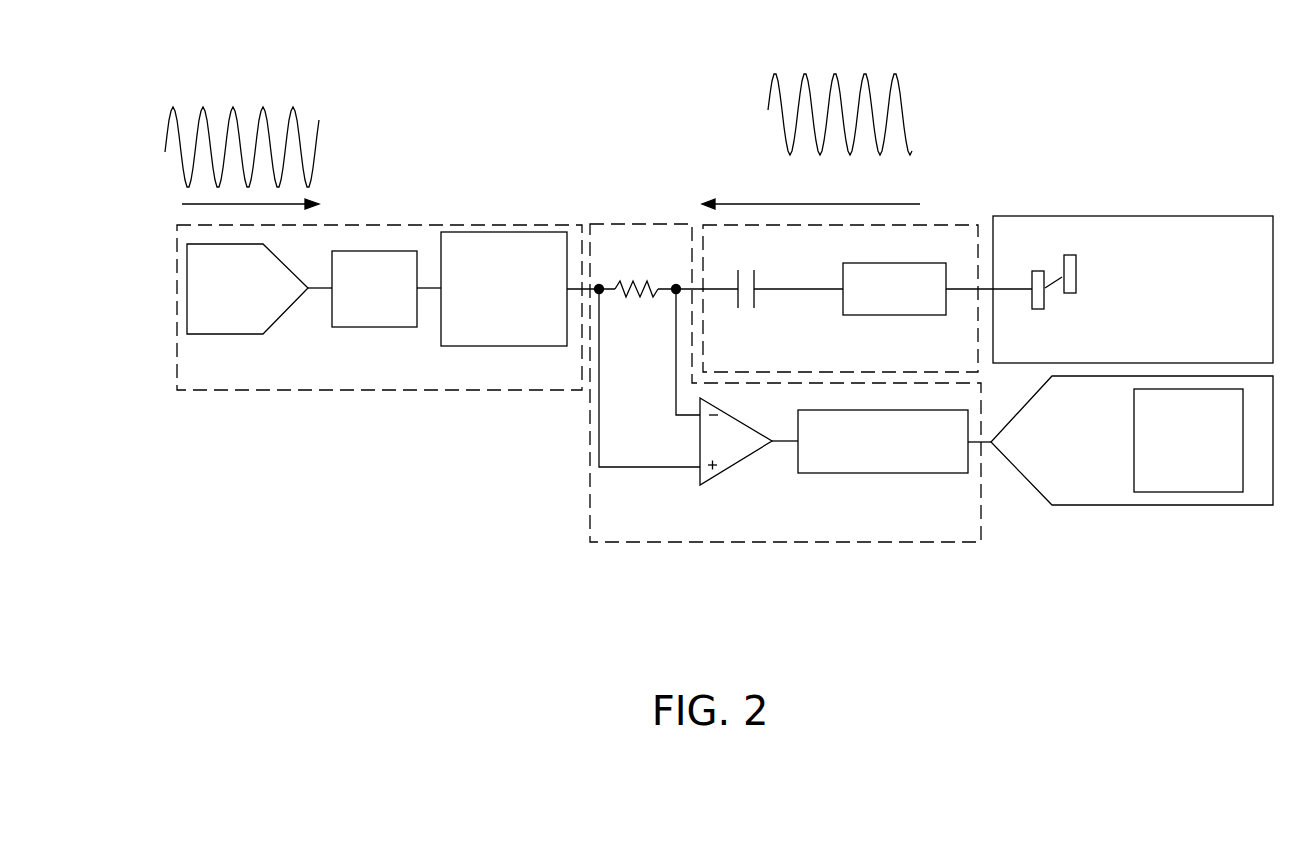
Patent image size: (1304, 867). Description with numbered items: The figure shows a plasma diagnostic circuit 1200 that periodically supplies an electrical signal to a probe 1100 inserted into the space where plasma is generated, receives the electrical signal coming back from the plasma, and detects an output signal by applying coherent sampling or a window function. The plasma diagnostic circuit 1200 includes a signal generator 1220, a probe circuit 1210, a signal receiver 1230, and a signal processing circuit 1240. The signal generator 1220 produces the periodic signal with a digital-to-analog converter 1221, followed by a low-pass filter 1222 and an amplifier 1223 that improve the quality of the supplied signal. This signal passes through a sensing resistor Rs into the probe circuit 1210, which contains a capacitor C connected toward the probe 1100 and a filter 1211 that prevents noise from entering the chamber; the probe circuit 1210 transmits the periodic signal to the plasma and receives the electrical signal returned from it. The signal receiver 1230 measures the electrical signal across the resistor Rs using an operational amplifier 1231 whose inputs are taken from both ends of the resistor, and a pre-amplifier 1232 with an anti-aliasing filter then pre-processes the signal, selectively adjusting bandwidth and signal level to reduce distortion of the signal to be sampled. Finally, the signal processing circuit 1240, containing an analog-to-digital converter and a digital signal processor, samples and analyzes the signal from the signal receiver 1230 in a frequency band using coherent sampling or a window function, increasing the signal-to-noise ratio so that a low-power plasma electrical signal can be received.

The plasma diagnostic circuit 1200 is at (463, 40).
The probe 1100 is at (1127, 215).
The probe circuit 1210 is at (943, 225).
The filter 1211 is at (850, 278).
The signal generator 1220 is at (427, 225).
The digital-to-analog converter 1221 is at (231, 334).
The low-pass filter 1222 is at (373, 327).
The amplifier 1223 is at (503, 346).
The signal receiver 1230 is at (952, 543).
The operational amplifier 1231 is at (752, 430).
The pre-amplifier 1232 is at (908, 467).
The signal processing circuit 1240 is at (1160, 505).